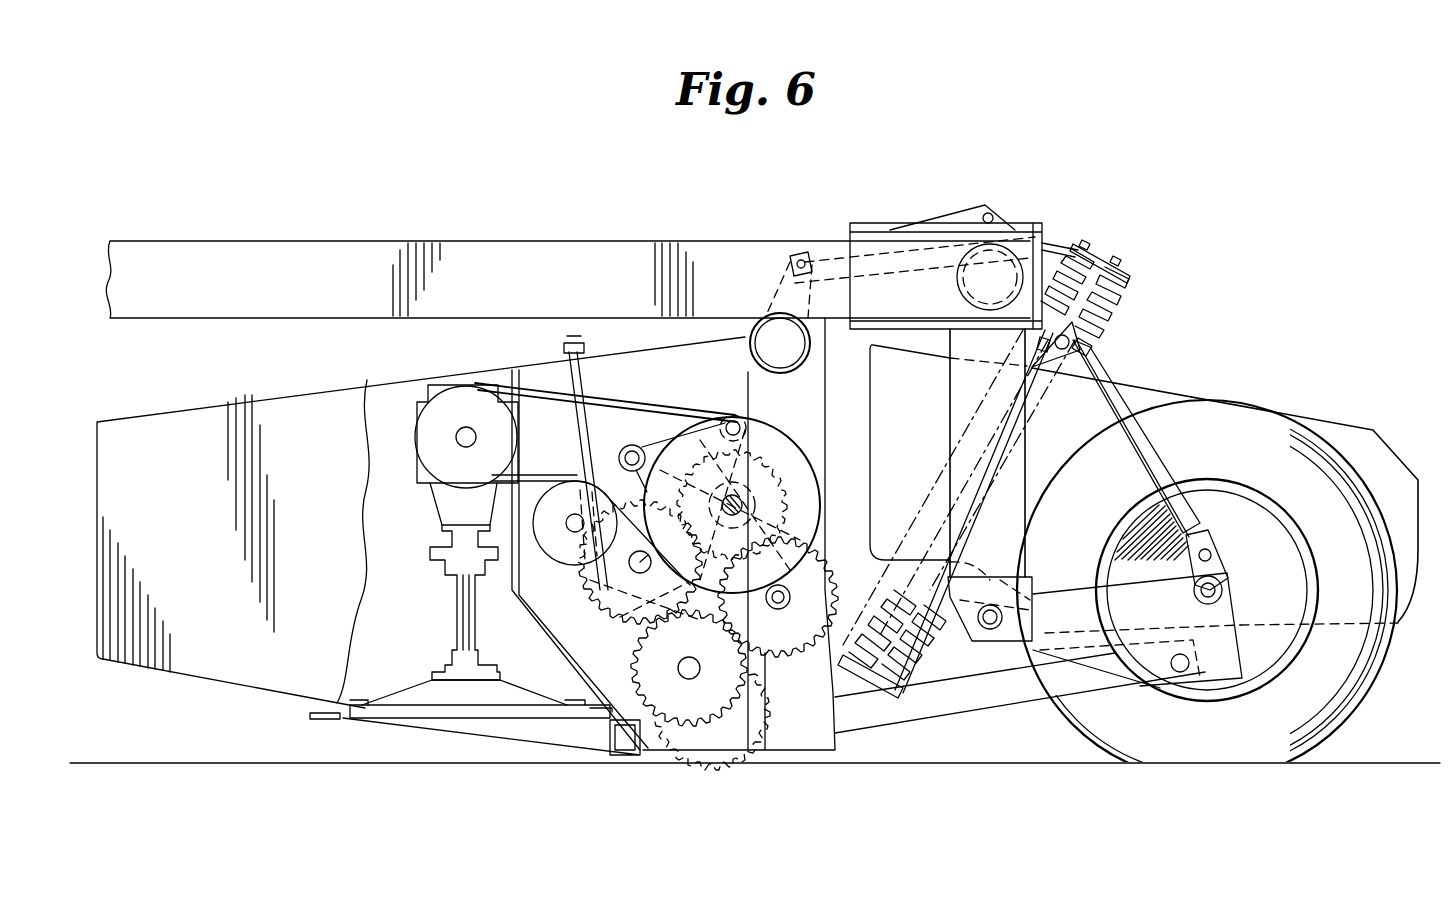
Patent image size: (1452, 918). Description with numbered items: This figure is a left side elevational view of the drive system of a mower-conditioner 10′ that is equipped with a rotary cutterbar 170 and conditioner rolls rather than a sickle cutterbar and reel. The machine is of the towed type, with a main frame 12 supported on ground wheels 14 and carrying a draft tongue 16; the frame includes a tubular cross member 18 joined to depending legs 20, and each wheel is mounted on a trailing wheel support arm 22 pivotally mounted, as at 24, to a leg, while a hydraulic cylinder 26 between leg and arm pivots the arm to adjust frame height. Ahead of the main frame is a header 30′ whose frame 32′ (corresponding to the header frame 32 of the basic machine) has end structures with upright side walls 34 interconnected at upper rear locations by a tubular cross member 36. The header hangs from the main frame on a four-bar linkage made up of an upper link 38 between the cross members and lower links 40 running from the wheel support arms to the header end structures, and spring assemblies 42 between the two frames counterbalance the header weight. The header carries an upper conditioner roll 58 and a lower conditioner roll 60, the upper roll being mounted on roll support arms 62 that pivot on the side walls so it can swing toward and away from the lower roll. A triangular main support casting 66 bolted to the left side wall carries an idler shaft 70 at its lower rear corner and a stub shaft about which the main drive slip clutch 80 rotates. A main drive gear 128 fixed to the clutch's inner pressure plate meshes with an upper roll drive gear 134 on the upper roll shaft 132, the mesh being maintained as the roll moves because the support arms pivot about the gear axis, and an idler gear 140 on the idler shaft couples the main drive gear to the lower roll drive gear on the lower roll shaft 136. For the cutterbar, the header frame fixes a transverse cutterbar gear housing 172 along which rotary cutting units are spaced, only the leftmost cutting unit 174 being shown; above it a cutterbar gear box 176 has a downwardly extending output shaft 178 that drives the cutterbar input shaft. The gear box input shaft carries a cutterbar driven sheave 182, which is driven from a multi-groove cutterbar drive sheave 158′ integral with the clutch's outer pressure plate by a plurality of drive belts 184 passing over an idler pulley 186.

The mower-conditioner 10′ is at (490, 210).
The main frame 12 is at (1040, 222).
The ground wheels 14 is at (1352, 705).
The draft tongue 16 is at (262, 297).
The tubular cross member 18 is at (938, 306).
The depending legs 20 is at (1032, 473).
The trailing wheel support arms 22 is at (1142, 622).
The pivot 24 is at (976, 620).
The hydraulic cylinder 26 is at (1155, 456).
The header 30′ is at (300, 372).
The header frame 32 is at (486, 365).
The header frame 32′ is at (90, 465).
The side walls 34 is at (194, 477).
The tubular cross member 36 is at (750, 325).
The upper link 38 is at (950, 224).
The lower links 40 is at (996, 706).
The spring assemblies 42 is at (1122, 311).
The upper conditioner roll 58 is at (580, 650).
The lower conditioner roll 60 is at (748, 745).
The roll support arms 62 is at (708, 430).
The main support casting 66 is at (641, 440).
The idler shaft 70 is at (778, 605).
The main drive slip clutch 80 is at (828, 458).
The main drive gear 128 is at (830, 455).
The upper roll shaft 132 is at (630, 562).
The upper roll drive gear 134 is at (583, 578).
The lower roll shaft 136 is at (688, 672).
The idler gear 140 is at (818, 656).
The cutterbar drive sheave 158′ is at (780, 395).
The rotary cutterbar 170 is at (412, 670).
The cutterbar gear housing 172 is at (458, 745).
The cutting unit 174 is at (322, 715).
The cutterbar gear box 176 is at (428, 403).
The output shaft 178 is at (440, 546).
The cutterbar driven sheave 182 is at (432, 447).
The drive belts 184 is at (593, 393).
The idler pulley 186 is at (560, 498).